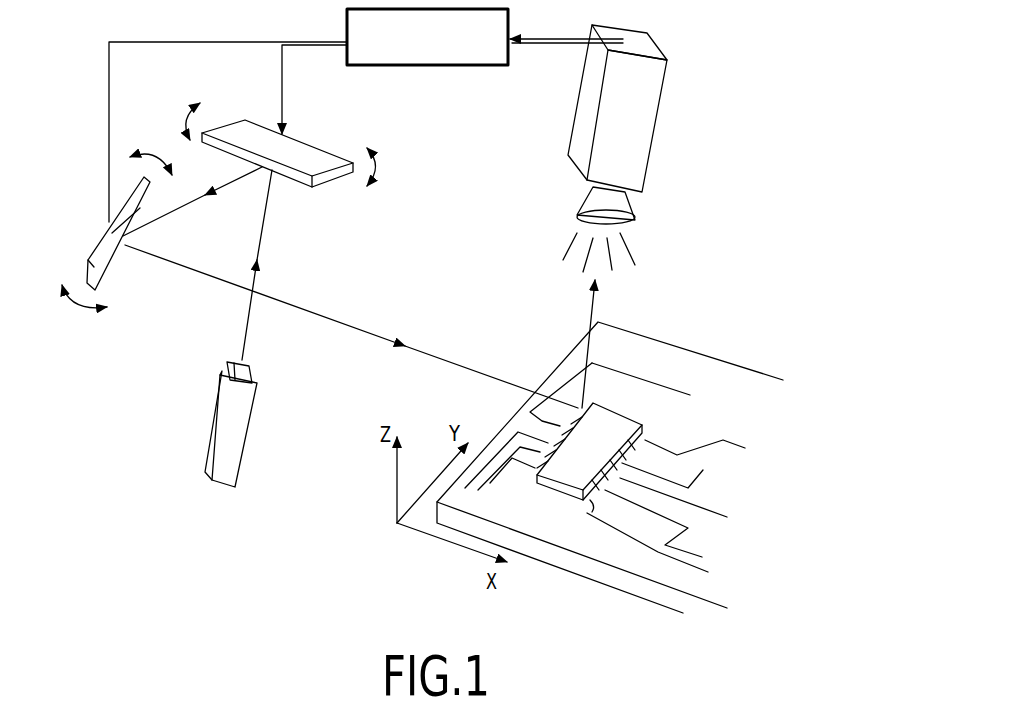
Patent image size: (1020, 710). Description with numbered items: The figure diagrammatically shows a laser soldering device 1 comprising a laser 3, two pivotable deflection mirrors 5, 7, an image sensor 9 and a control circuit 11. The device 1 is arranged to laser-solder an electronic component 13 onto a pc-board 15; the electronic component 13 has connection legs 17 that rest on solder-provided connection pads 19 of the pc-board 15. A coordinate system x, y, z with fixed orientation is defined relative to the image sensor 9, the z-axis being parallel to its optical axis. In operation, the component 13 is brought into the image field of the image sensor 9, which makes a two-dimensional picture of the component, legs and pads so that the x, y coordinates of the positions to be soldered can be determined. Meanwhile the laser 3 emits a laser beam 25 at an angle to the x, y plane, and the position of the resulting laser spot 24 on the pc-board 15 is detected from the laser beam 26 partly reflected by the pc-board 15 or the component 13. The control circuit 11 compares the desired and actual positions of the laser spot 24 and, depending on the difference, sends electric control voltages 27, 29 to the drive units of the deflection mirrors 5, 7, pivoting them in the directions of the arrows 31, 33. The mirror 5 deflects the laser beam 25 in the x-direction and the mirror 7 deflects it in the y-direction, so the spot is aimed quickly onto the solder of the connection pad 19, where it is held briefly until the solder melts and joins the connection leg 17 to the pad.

The laser soldering device 1 is at (135, 465).
The laser 3 is at (210, 430).
The deflection mirror 5 is at (326, 165).
The deflection mirror 7 is at (97, 247).
The image sensor 9 is at (652, 103).
The control circuit 11 is at (478, 56).
The electronic component 13 is at (622, 400).
The pc-board 15 is at (727, 377).
The connection legs 17 is at (528, 472).
The connection pads 19 is at (596, 500).
The laser spot 24 is at (582, 408).
The laser beam 25 is at (395, 342).
The laser beam 26 is at (593, 306).
The electric control voltage 27 is at (282, 72).
The electric control voltage 29 is at (109, 72).
The arrow 31 is at (183, 118).
The arrow 33 is at (75, 322).